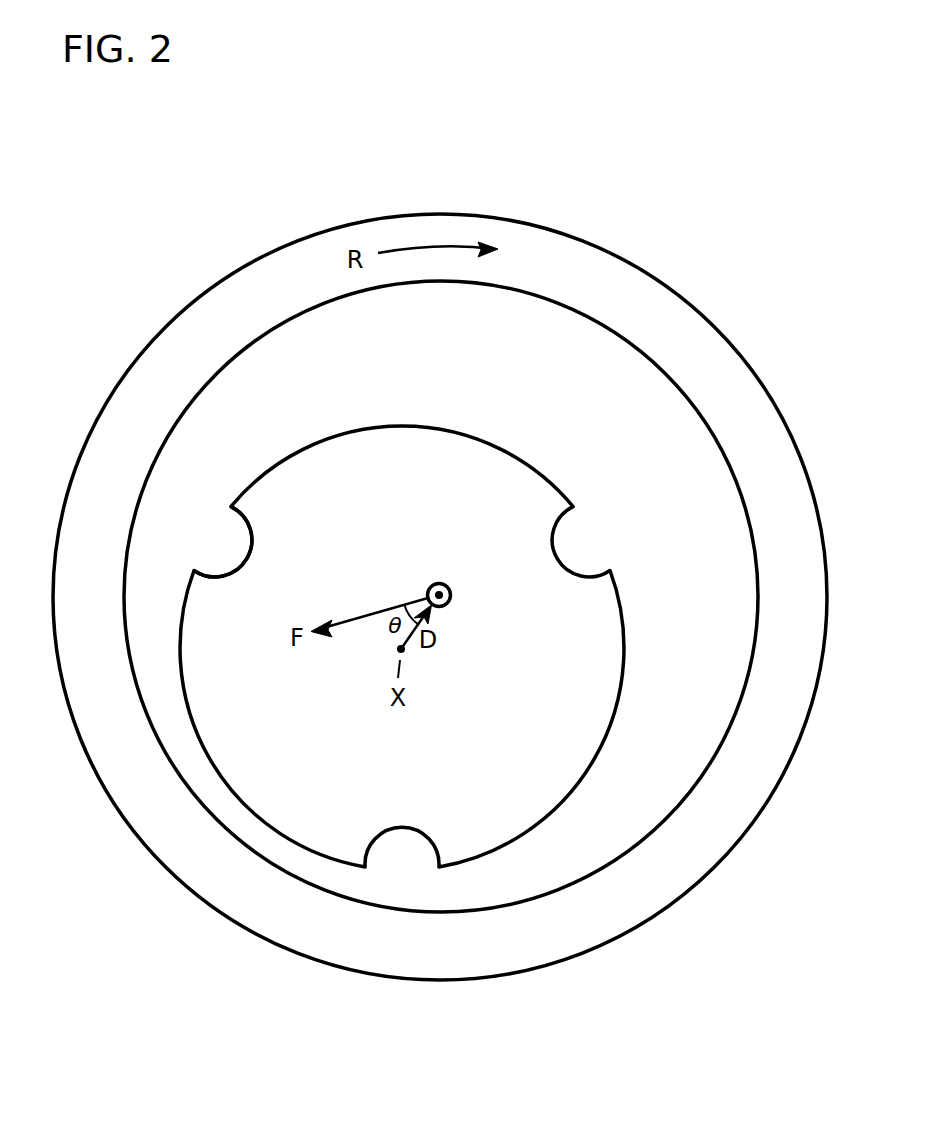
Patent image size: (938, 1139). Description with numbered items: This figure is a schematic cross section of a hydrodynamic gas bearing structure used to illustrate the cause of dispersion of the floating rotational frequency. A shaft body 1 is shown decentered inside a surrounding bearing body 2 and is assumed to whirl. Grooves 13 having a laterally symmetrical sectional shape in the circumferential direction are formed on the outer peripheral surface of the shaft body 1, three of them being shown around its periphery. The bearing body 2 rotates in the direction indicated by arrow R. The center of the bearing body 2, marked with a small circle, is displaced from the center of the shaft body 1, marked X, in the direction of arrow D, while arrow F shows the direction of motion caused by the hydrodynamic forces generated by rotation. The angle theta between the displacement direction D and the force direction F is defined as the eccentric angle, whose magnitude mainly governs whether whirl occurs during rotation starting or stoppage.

The shaft body 1 is at (303, 482).
The bearing body 2 is at (198, 327).
The grooves 13 is at (222, 543).